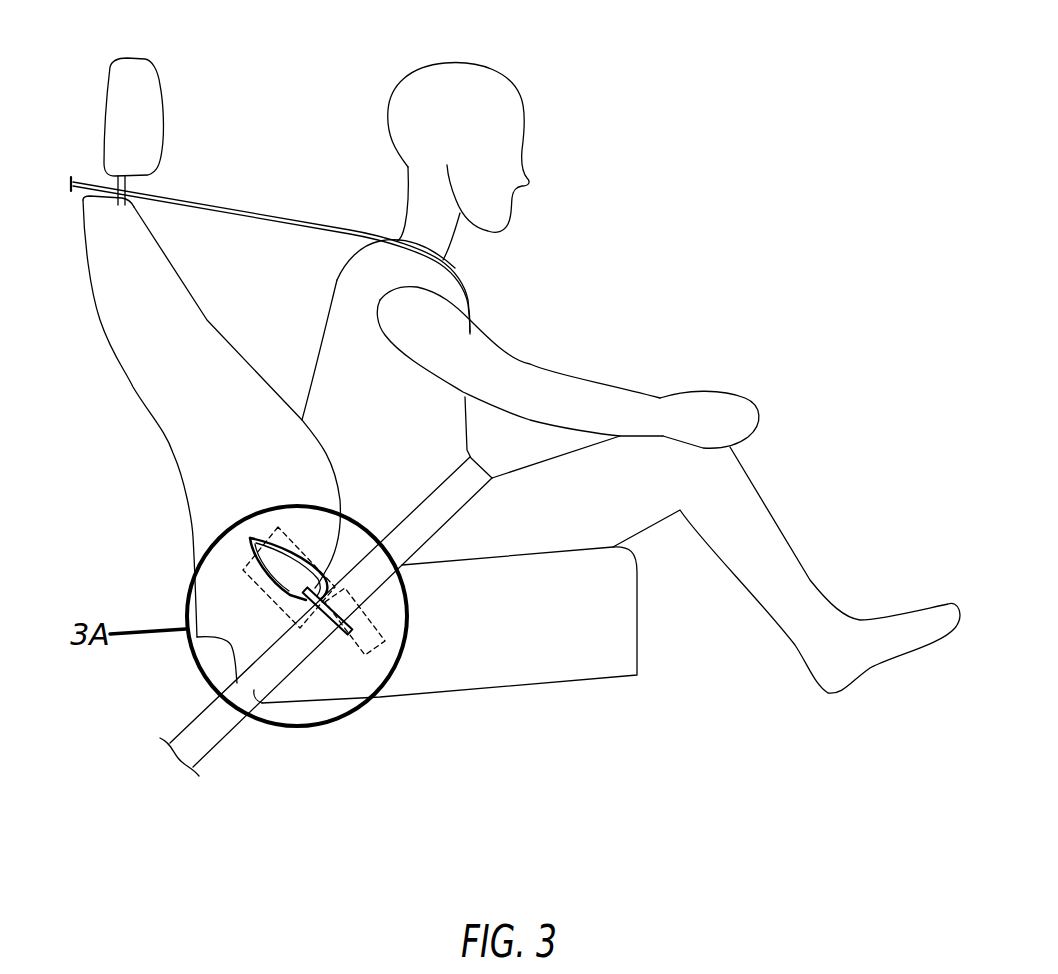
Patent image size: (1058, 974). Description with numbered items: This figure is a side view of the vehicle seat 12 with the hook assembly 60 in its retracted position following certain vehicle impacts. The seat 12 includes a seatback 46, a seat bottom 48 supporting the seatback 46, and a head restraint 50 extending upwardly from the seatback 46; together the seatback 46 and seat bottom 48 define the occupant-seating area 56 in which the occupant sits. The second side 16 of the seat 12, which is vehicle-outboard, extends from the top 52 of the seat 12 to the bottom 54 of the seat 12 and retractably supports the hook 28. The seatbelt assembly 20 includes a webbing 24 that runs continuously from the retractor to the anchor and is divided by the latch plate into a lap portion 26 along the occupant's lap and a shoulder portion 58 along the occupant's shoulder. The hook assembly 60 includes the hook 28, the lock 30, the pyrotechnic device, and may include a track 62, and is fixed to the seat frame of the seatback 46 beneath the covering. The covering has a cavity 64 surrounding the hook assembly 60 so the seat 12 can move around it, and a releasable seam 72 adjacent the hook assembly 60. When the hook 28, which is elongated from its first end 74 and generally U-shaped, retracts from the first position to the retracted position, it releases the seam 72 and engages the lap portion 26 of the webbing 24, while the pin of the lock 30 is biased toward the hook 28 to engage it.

The vehicle seat 12 is at (648, 89).
The second side 16 is at (185, 421).
The seatbelt assembly 20 is at (257, 232).
The webbing 24 is at (300, 213).
The lap portion 26 is at (427, 517).
The hook 28 is at (290, 623).
The lock 30 is at (360, 606).
The seatback 46 is at (98, 333).
The seat bottom 48 is at (555, 657).
The head restraint 50 is at (128, 73).
The top 52 is at (97, 185).
The bottom 54 is at (227, 641).
The occupant-seating area 56 is at (605, 311).
The shoulder portion 58 is at (243, 207).
The hook assembly 60 is at (336, 646).
The track 62 is at (362, 660).
The cavity 64 is at (243, 575).
The releasable seam 72 is at (266, 528).
The first end 74 is at (362, 633).